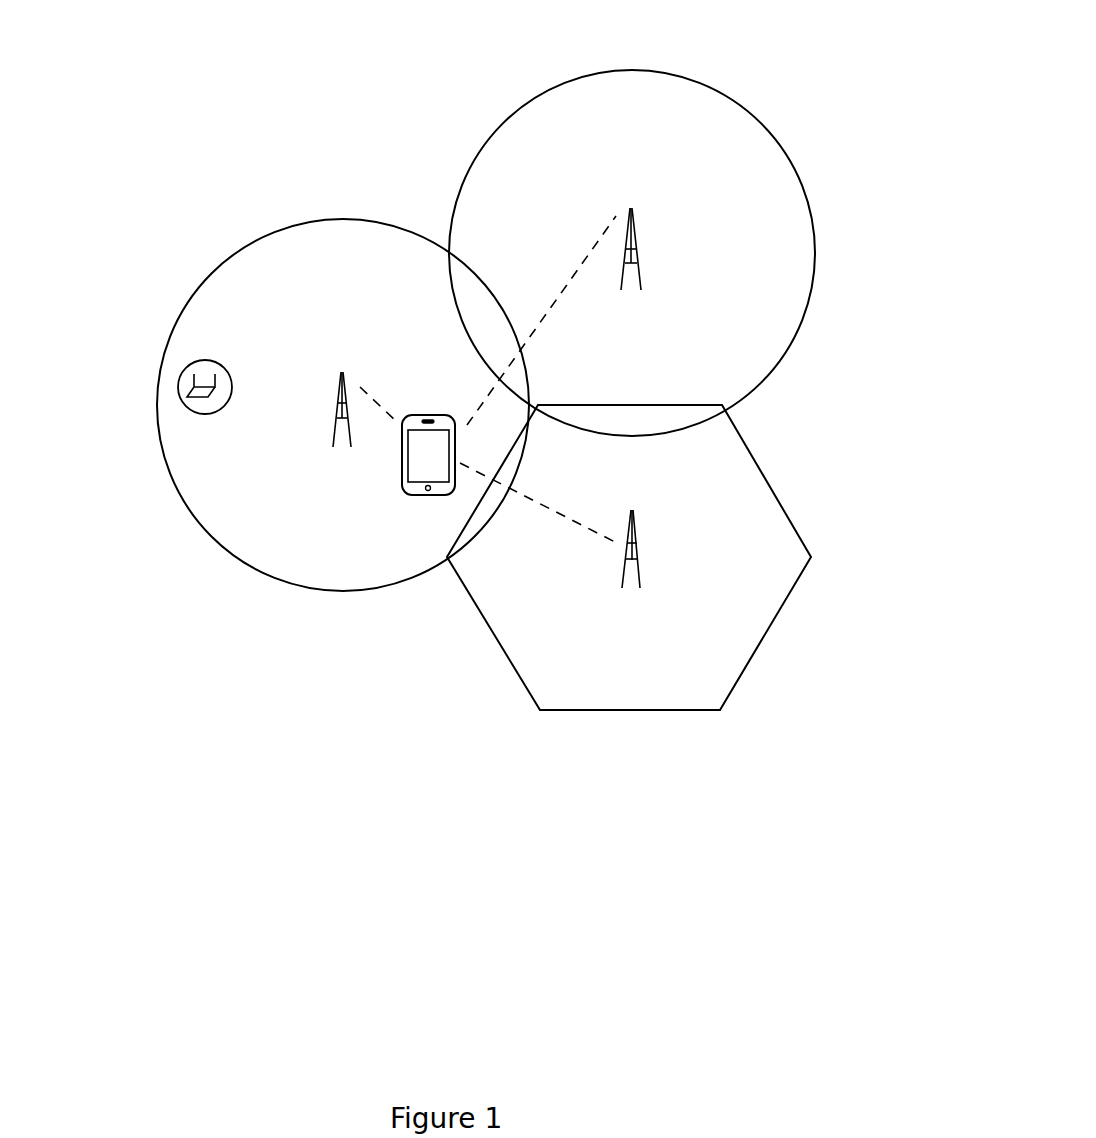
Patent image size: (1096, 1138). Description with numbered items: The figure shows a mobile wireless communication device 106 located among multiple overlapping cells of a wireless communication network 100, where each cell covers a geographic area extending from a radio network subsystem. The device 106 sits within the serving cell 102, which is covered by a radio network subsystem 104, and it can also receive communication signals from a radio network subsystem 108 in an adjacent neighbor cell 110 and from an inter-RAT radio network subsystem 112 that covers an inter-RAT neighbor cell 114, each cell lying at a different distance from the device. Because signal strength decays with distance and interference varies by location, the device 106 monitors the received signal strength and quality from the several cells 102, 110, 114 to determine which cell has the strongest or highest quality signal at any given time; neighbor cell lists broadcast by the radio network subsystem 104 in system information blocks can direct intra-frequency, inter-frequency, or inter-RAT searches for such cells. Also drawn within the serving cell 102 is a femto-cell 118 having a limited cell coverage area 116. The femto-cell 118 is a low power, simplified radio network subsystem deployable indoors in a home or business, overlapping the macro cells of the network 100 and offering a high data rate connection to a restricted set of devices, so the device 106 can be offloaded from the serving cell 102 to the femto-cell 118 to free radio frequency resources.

The wireless communication network 100 is at (162, 130).
The serving cell 102 is at (242, 250).
The radio network subsystem 104 is at (343, 372).
The mobile wireless communication device 106 is at (402, 457).
The radio network subsystem 108 is at (631, 210).
The neighbor cell 110 is at (622, 68).
The inter-RAT radio network subsystem 112 is at (622, 570).
The inter-RAT neighbor cell 114 is at (763, 470).
The cell coverage area 116 is at (202, 362).
The femto-cell 118 is at (185, 400).